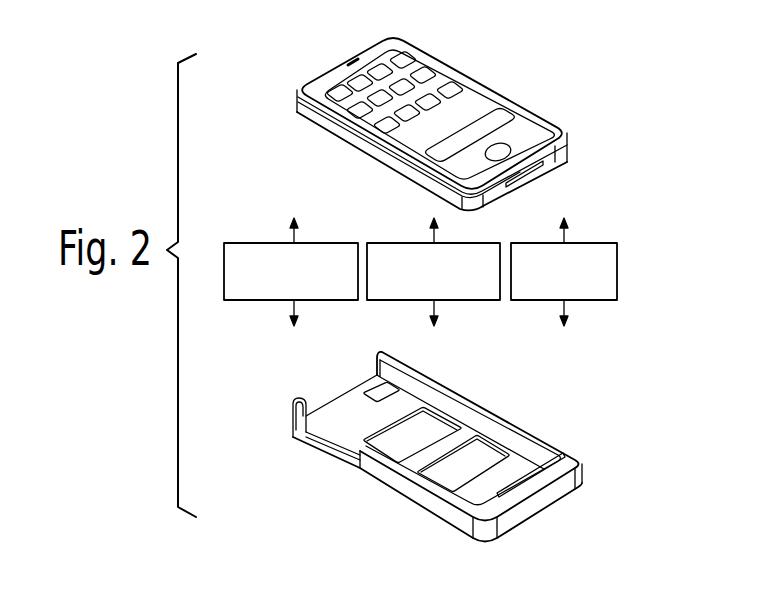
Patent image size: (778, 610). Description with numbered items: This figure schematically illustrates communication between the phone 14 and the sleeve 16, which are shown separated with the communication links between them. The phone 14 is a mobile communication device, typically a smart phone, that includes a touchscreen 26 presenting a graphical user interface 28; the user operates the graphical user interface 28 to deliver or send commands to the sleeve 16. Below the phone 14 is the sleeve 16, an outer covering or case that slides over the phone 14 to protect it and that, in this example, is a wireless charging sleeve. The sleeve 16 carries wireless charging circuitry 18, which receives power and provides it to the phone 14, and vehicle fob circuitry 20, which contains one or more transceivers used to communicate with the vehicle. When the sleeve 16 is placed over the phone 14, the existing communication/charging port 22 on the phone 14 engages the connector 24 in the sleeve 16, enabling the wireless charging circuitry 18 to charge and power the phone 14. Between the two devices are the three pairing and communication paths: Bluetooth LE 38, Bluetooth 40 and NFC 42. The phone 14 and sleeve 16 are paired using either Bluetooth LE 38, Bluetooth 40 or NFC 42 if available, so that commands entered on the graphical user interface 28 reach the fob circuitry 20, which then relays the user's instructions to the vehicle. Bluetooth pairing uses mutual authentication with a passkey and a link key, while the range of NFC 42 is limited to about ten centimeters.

The phone 14 is at (453, 108).
The sleeve 16 is at (488, 455).
The wireless charging circuitry 18 is at (432, 409).
The vehicle fob circuitry 20 is at (487, 450).
The communication/charging port 22 is at (527, 180).
The connector 24 is at (528, 473).
The touchscreen 26 is at (460, 92).
The graphical user interface 28 is at (407, 60).
The Bluetooth LE 38 is at (272, 301).
The Bluetooth 40 is at (415, 301).
The NFC 42 is at (597, 301).